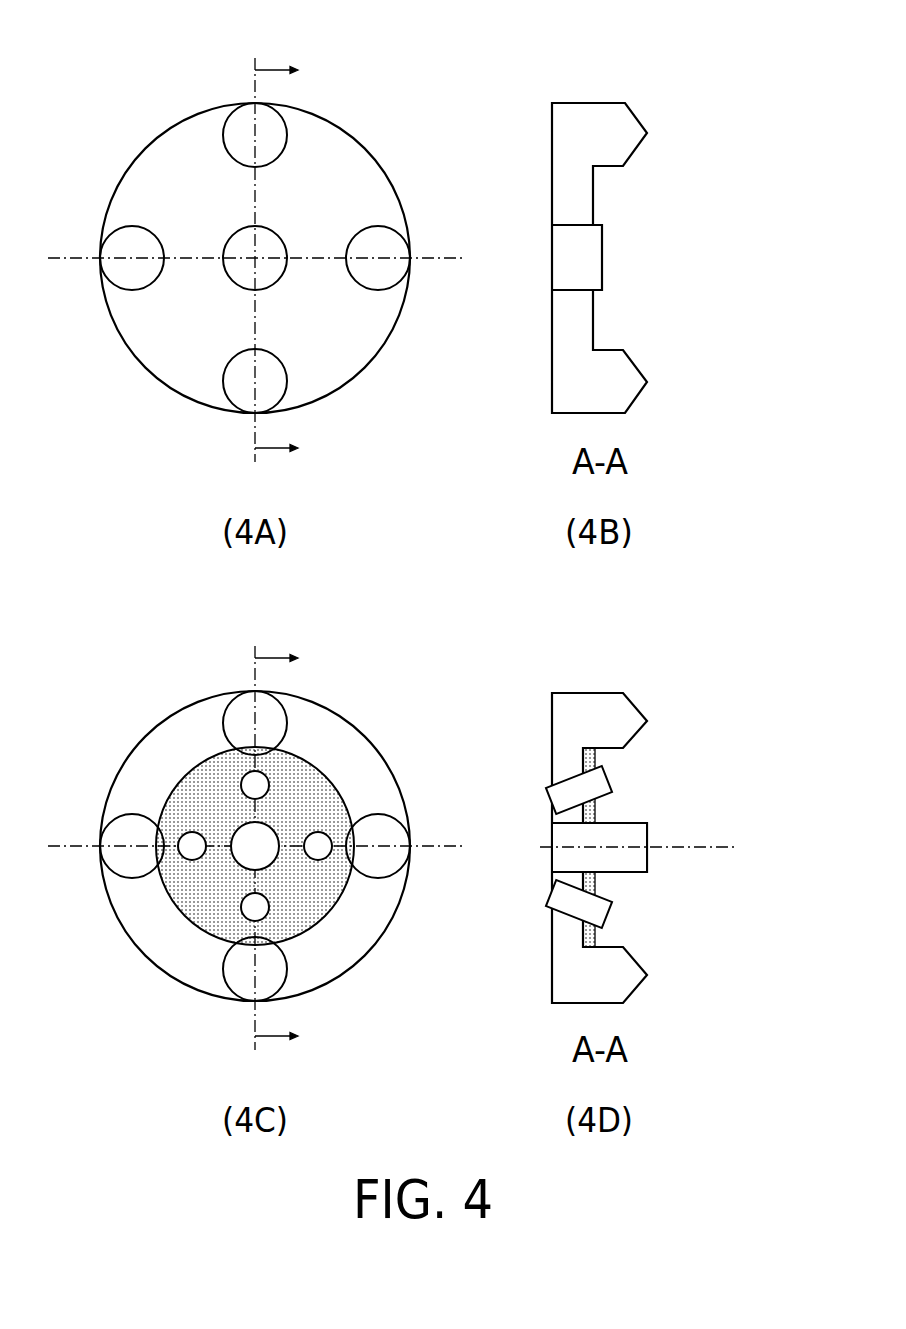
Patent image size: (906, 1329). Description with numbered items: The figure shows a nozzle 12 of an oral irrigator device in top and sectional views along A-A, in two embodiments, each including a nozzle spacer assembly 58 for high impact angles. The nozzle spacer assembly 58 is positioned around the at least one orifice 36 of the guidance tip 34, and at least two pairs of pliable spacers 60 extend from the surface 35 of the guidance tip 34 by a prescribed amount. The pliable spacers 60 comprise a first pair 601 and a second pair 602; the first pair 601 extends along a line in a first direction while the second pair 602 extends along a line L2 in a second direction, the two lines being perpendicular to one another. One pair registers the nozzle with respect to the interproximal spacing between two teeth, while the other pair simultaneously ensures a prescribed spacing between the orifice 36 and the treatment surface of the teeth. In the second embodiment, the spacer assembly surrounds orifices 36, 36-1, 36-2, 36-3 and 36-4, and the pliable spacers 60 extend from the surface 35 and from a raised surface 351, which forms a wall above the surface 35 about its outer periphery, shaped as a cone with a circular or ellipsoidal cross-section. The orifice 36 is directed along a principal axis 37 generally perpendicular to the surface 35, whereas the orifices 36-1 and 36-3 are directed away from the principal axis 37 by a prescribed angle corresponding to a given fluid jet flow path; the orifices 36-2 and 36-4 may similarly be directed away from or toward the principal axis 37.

The nozzle 12 is at (400, 78).
The guidance tip 34 is at (372, 178).
The surface 35 is at (190, 345).
The raised surface 351 is at (180, 942).
The orifice 36 is at (240, 273).
The orifice 36-1 is at (258, 788).
The orifice 36-2 is at (318, 850).
The orifice 36-3 is at (258, 908).
The orifice 36-4 is at (192, 845).
The principal axis 37 is at (705, 848).
The nozzle spacer assembly 58 is at (172, 95).
The pliable spacers 60 is at (248, 100).
The first pair of pliable spacers 601 is at (272, 130).
The second pair of pliable spacers 602 is at (128, 280).
The line L2 is at (57, 257).